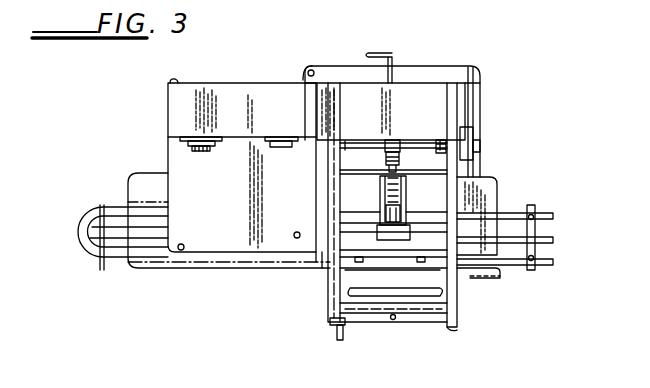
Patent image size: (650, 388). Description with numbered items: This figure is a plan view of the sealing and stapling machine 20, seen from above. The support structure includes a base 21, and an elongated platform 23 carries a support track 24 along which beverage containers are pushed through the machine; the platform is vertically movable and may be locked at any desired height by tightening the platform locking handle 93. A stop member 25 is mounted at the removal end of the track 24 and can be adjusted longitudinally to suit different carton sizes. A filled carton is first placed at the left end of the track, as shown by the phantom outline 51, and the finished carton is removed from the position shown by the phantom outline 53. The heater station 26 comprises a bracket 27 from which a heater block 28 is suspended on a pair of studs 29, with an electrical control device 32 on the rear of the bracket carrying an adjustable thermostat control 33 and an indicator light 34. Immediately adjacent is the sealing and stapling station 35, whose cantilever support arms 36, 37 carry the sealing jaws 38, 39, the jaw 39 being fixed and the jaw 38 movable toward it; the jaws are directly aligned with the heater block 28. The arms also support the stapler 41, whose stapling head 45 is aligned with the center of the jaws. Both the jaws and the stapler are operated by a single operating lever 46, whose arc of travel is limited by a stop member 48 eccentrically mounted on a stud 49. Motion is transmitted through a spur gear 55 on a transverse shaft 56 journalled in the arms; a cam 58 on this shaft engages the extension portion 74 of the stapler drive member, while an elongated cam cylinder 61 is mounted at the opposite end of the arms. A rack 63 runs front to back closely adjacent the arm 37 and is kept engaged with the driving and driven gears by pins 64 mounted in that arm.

The sealing and stapling machine 20 is at (238, 328).
The base 21 is at (435, 78).
The elongated platform 23 is at (492, 270).
The support track 24 is at (512, 259).
The stop member 25 is at (536, 232).
The heater station 26 is at (162, 124).
The bracket 27 is at (168, 153).
The heater block 28 is at (320, 250).
The studs 29 is at (184, 245).
The electrical control device 32 is at (248, 98).
The thermostat control 33 is at (205, 152).
The indicator light 34 is at (272, 148).
The sealing and stapling station 35 is at (494, 176).
The cantilever support arm 36 is at (458, 329).
The cantilever support arm 37 is at (332, 322).
The sealing jaw 38 is at (392, 283).
The sealing jaw 39 is at (347, 250).
The stapler 41 is at (414, 208).
The stapling head 45 is at (409, 233).
The operating lever 46 is at (475, 91).
The stop member 48 is at (468, 138).
The stud 49 is at (480, 146).
The phantom outline 51 is at (107, 268).
The phantom outline 53 is at (502, 275).
The spur gear 55 is at (441, 140).
The shaft 56 is at (367, 141).
The cam 58 is at (396, 140).
The cam cylinder 61 is at (432, 320).
The rack 63 is at (340, 328).
The pins 64 is at (335, 326).
The extension portion 74 is at (386, 162).
The platform locking handle 93 is at (392, 55).